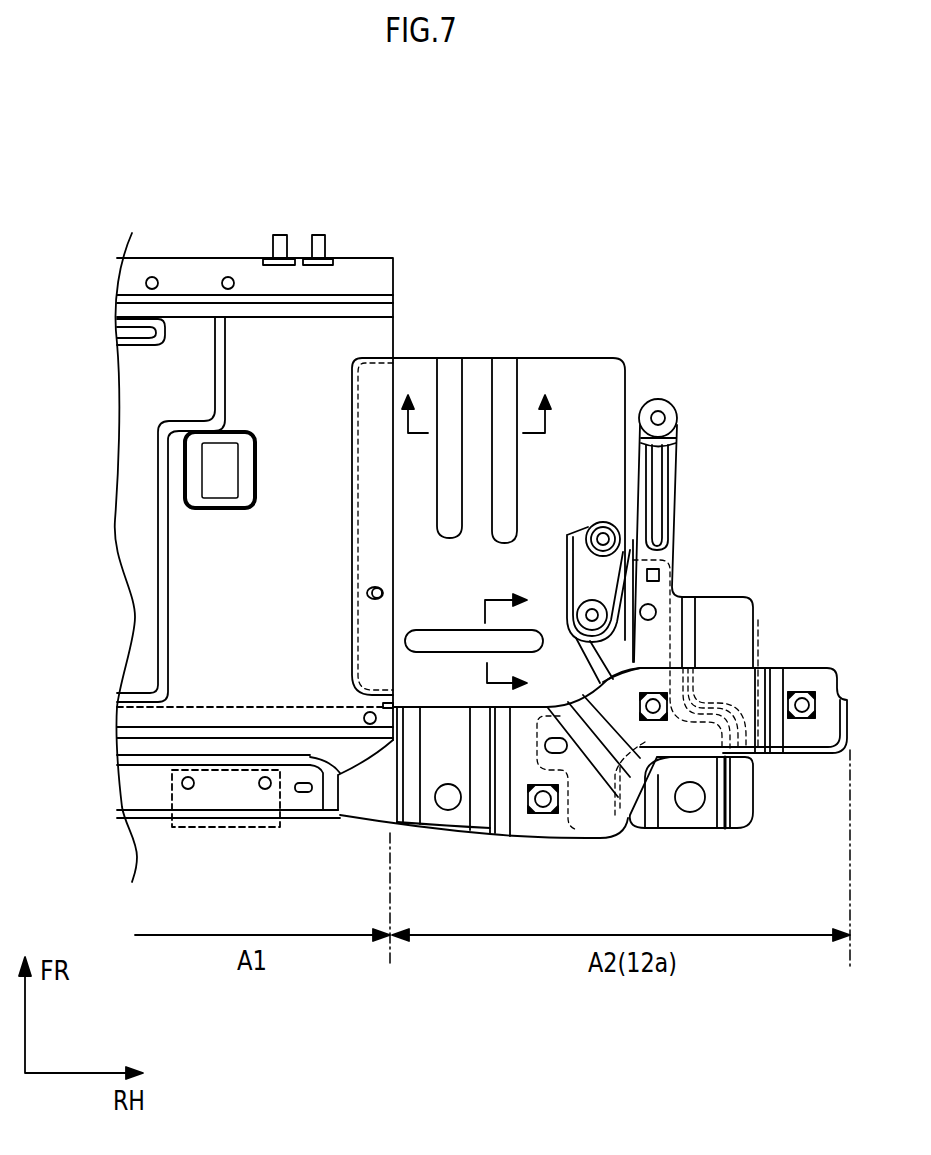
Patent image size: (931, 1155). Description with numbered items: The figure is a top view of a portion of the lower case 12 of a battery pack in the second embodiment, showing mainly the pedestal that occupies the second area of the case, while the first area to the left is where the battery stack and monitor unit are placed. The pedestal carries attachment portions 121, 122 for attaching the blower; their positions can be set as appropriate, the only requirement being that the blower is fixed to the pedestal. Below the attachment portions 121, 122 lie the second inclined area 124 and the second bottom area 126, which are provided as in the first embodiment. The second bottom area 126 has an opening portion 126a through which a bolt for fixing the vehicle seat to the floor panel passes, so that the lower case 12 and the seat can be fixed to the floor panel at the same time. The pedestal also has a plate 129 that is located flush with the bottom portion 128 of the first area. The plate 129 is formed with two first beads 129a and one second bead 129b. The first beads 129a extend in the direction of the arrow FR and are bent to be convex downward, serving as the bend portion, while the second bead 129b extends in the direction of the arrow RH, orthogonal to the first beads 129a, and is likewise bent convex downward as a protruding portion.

The lower case 12 is at (373, 247).
The attachment portion 121 is at (603, 521).
The attachment portion 122 is at (657, 693).
The second inclined area 124 is at (482, 797).
The second bottom area 126 is at (430, 767).
The opening portion 126a is at (452, 808).
The bottom portion 128 is at (270, 375).
The plate 129 is at (565, 395).
The first bead 129a is at (507, 377).
The second bead 129b is at (423, 646).